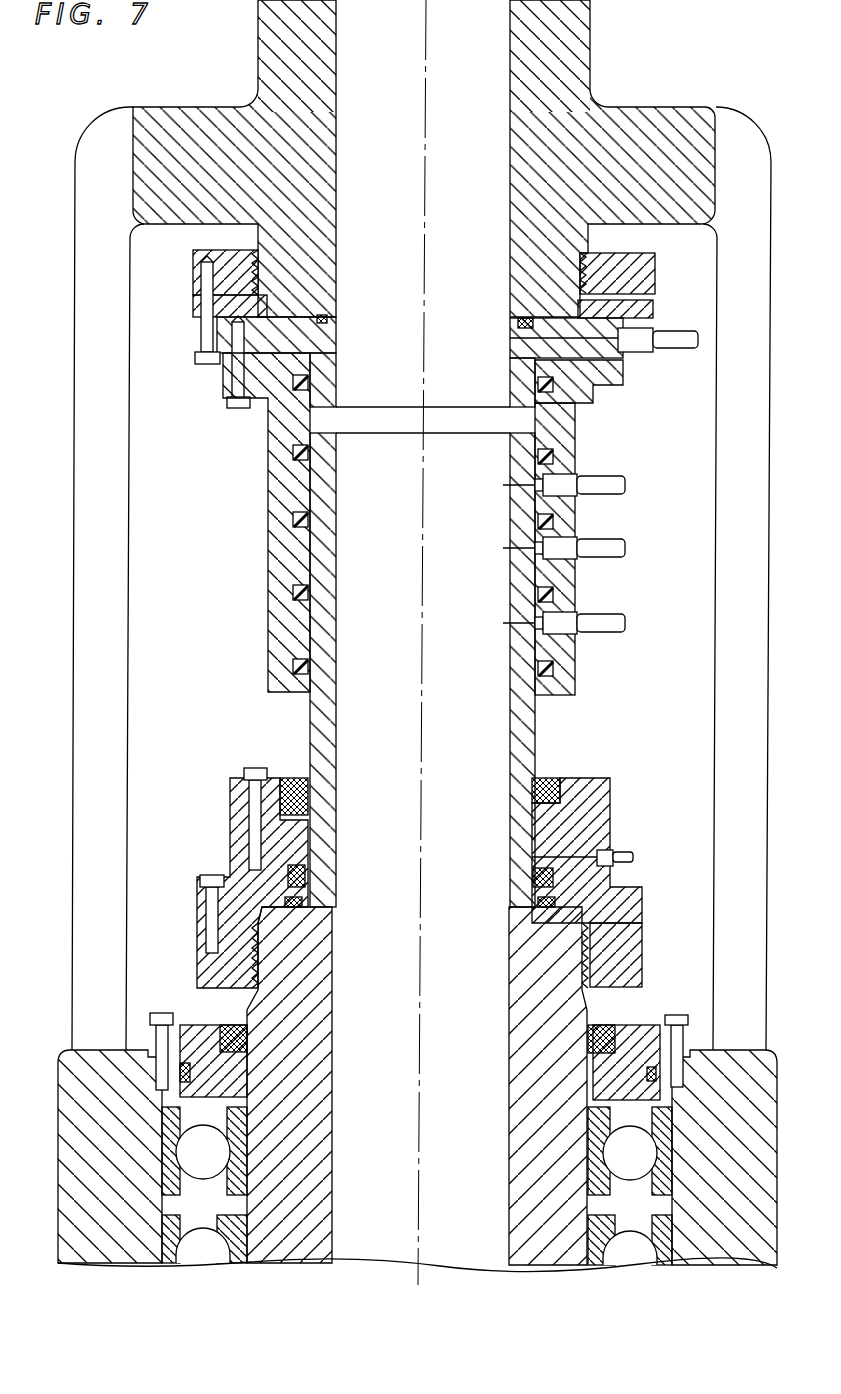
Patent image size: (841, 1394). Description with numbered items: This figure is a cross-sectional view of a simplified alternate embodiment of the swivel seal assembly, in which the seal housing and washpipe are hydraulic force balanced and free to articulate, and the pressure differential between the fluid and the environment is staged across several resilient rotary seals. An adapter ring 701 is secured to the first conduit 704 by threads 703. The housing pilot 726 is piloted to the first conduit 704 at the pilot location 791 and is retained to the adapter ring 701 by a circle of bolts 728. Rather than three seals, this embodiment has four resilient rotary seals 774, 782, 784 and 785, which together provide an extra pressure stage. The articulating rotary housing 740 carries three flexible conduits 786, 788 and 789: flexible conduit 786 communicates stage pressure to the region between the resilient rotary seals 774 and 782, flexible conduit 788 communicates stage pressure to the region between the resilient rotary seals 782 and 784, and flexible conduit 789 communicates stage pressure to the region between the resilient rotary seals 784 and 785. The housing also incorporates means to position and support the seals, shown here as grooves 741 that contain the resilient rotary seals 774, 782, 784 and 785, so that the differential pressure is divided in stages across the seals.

The first conduit 704 is at (290, 64).
The threads 703 is at (250, 270).
The adapter ring 701 is at (196, 265).
The pilot location 791 is at (232, 312).
The circle of bolts 728 is at (200, 355).
The grooves 741 is at (298, 665).
The housing pilot 726 is at (520, 388).
The articulating rotary housing 740 is at (560, 430).
The resilient rotary seal 774 is at (537, 455).
The flexible conduit 786 is at (612, 472).
The resilient rotary seal 782 is at (536, 523).
The flexible conduit 788 is at (612, 535).
The resilient rotary seal 784 is at (536, 600).
The flexible conduit 789 is at (608, 610).
The resilient rotary seal 785 is at (536, 673).